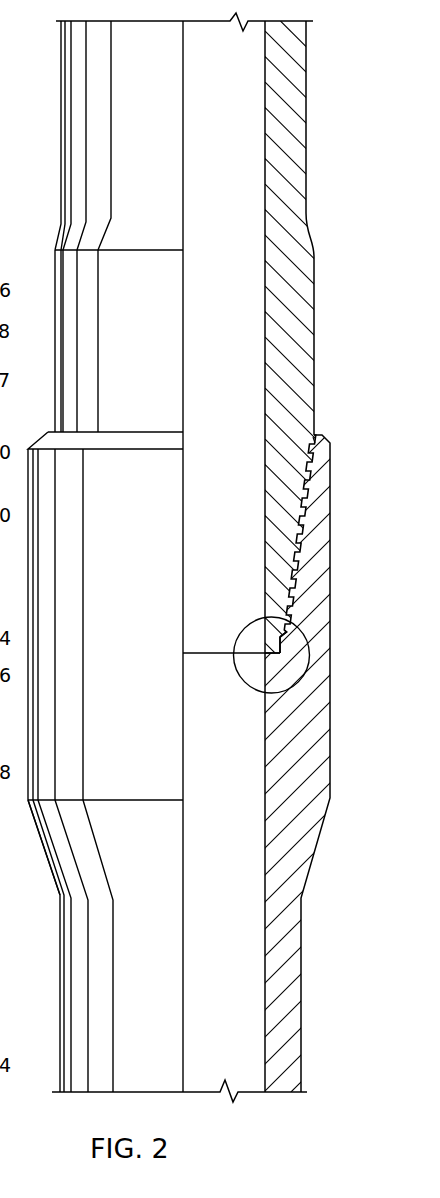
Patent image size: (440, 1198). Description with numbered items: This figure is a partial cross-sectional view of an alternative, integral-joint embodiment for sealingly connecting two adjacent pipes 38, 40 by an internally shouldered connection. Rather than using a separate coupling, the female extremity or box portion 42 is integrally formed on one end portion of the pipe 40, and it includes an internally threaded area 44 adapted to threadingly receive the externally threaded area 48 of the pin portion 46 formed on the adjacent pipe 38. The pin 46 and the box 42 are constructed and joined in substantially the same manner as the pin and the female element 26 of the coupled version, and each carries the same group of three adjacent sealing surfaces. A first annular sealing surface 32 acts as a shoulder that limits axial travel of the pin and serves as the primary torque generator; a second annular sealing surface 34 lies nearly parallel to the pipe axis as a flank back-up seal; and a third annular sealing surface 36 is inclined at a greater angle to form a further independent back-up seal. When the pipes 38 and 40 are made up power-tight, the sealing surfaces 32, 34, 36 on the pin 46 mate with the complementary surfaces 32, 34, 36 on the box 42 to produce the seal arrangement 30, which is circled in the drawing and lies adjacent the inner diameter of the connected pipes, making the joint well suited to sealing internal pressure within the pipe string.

The female element 26 is at (30, 847).
The seal arrangement 30 is at (253, 690).
The first annular sealing surface 32 is at (277, 660).
The second annular sealing surface 34 is at (283, 646).
The third annular sealing surface 36 is at (290, 631).
The pipe 38 is at (150, 77).
The pipe 40 is at (138, 963).
The box portion 42 is at (320, 467).
The internally threaded area 44 is at (302, 527).
The pin portion 46 is at (282, 503).
The externally threaded area 48 is at (311, 444).